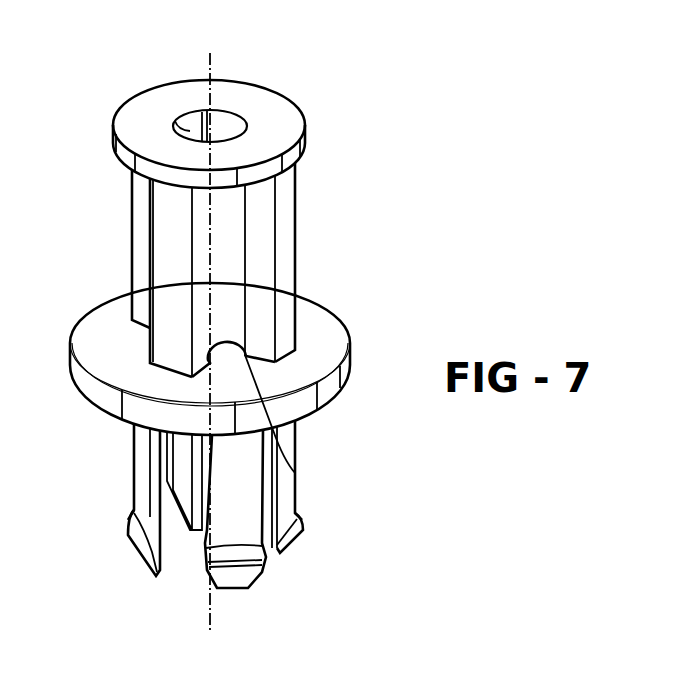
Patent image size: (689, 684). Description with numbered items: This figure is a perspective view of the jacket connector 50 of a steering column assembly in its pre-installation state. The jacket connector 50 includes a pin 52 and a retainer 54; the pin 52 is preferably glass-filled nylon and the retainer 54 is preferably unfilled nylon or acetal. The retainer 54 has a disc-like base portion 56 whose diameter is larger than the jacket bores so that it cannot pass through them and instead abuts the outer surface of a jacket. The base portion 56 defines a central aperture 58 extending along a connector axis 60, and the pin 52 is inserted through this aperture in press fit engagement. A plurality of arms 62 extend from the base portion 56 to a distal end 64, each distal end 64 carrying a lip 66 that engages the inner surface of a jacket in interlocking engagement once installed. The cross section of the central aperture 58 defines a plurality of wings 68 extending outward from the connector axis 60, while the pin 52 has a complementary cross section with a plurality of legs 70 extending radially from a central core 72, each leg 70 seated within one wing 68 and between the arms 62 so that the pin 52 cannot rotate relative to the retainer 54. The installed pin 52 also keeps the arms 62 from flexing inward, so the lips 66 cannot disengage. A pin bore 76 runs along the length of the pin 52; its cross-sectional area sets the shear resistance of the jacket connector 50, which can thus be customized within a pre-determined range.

The jacket connector 50 is at (342, 62).
The pin 52 is at (257, 98).
The retainer 54 is at (325, 313).
The base portion 56 is at (348, 376).
The central aperture 58 is at (295, 473).
The connector axis 60 is at (211, 612).
The arms 62 is at (297, 455).
The distal end 64 is at (282, 555).
The lip 66 is at (306, 523).
The wings 68 is at (283, 243).
The legs 70 is at (262, 362).
The central core 72 is at (230, 216).
The pin bore 76 is at (185, 119).